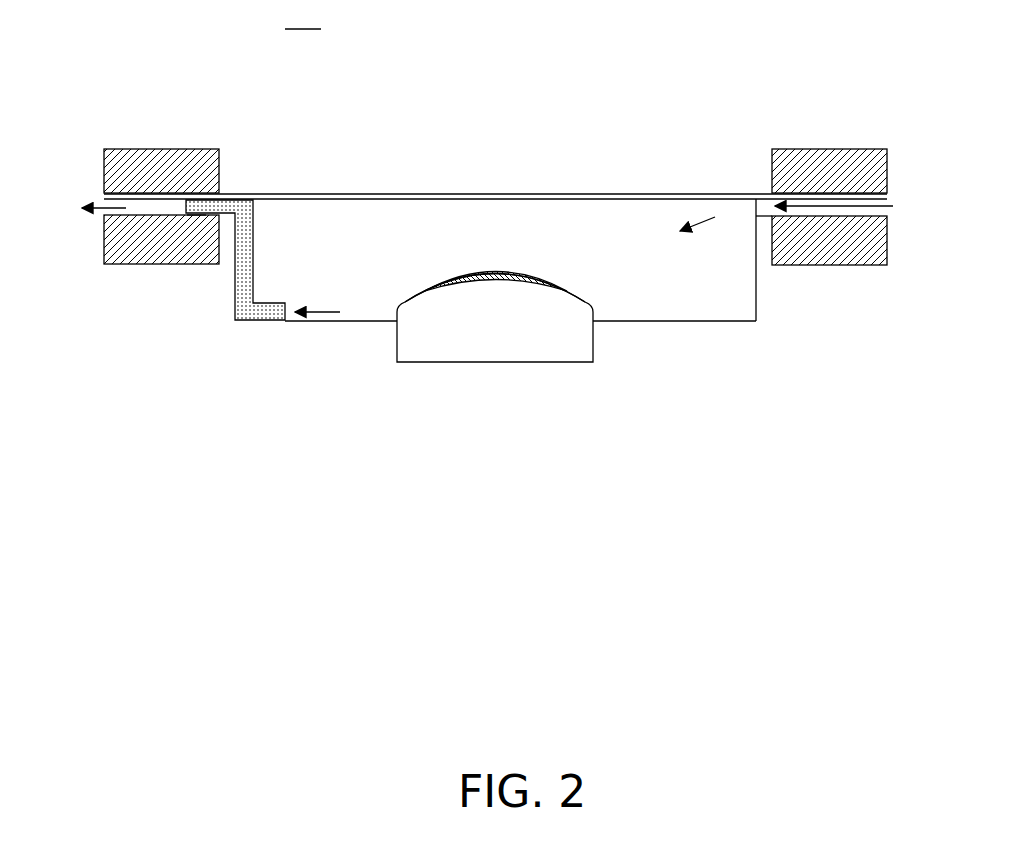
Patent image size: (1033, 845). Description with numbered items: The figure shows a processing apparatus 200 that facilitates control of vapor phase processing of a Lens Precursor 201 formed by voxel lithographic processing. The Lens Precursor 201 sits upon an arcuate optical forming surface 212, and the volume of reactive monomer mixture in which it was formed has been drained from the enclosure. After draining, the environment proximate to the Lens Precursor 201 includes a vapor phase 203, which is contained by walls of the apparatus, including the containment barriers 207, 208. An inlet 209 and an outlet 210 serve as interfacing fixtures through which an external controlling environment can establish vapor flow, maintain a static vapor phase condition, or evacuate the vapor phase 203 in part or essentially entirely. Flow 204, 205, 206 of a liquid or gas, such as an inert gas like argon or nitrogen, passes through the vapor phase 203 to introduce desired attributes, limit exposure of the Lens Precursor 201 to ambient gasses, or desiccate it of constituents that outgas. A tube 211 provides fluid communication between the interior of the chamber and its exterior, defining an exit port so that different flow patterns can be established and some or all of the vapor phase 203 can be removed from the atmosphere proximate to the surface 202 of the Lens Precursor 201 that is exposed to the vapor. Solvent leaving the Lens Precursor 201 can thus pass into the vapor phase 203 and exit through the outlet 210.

The processing apparatus 200 is at (304, 19).
The Lens Precursor 201 is at (487, 283).
The surface exposed to the vapor phase 202 is at (526, 268).
The vapor phase 203 is at (644, 236).
The flow 204 is at (856, 206).
The flow 205 is at (339, 312).
The flow to exterior of the chamber 206 is at (79, 209).
The containment barrier 207 is at (692, 321).
The containment barrier 208 is at (653, 194).
The inlet 209 is at (808, 265).
The outlet 210 is at (163, 264).
The tube 211 is at (248, 245).
The arcuate optical forming surface 212 is at (443, 363).